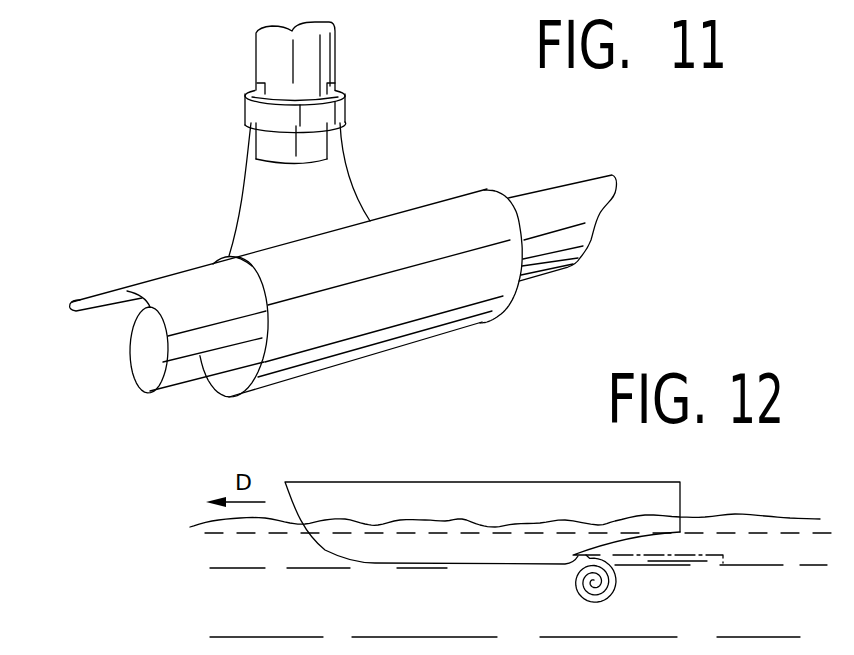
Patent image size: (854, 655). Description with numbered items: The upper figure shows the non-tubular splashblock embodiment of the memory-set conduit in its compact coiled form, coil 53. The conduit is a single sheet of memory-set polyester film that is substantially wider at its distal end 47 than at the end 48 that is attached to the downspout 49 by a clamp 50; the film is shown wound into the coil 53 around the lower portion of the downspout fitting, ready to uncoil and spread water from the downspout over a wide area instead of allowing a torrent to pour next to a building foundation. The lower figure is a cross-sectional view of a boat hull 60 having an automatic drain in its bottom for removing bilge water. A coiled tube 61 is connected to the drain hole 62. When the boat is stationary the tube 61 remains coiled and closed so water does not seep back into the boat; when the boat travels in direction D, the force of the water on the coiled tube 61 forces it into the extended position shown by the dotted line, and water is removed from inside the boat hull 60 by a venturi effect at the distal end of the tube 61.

In FIG. 11, the distal end 47 is at (90, 309).
In FIG. 11, the attached end 48 is at (333, 188).
In FIG. 11, the downspout 49 is at (322, 58).
In FIG. 11, the clamp 50 is at (333, 110).
In FIG. 11, the coil 53 is at (118, 371).
In FIG. 12, the boat hull 60 is at (637, 495).
In FIG. 12, the coiled tube 61 is at (613, 587).
In FIG. 12, the drain hole 62 is at (570, 566).